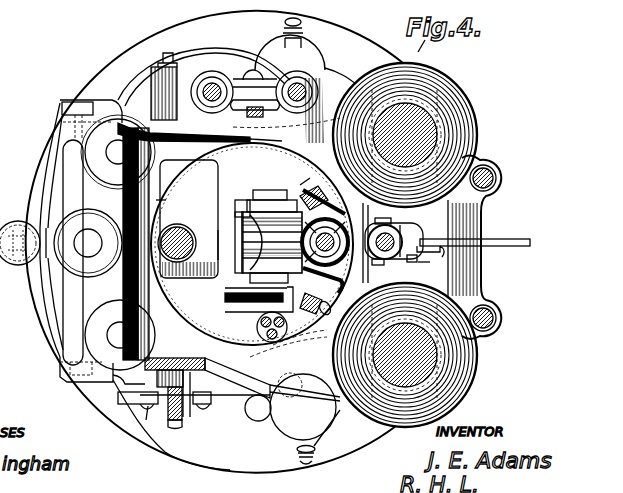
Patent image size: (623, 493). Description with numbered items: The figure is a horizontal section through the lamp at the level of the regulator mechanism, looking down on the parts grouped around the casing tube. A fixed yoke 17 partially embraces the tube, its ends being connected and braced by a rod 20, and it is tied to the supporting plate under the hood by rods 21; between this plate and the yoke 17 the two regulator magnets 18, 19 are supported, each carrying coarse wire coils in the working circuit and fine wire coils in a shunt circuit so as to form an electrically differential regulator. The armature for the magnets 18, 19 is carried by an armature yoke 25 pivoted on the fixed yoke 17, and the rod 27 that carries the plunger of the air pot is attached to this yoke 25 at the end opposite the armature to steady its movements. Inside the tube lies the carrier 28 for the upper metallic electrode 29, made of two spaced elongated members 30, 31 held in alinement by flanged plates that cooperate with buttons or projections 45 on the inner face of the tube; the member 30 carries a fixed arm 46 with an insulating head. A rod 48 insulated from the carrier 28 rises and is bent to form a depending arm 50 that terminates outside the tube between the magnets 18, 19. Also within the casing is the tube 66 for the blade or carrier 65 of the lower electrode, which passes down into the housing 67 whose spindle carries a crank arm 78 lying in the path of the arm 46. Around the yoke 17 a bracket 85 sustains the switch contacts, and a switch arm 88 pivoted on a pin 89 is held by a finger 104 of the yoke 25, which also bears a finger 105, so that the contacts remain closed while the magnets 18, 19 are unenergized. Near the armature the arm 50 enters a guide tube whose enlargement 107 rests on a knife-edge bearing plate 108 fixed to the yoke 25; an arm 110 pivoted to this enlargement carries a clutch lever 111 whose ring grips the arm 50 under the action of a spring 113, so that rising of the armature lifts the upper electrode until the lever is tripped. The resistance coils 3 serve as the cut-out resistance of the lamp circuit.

The resistance coils 3 is at (195, 277).
The yoke 17 is at (229, 268).
The magnet 18 is at (474, 137).
The magnet 19 is at (474, 357).
The rod 20 is at (140, 200).
The rods 21 is at (496, 178).
The armature yoke 25 is at (205, 436).
The rod 27 is at (325, 242).
The carrier 28 is at (272, 193).
The upper metallic electrode 29 is at (268, 242).
The elongated member 30 is at (269, 278).
The elongated member 31 is at (226, 212).
The buttons or projections 45 is at (308, 178).
The fixed arm 46 is at (225, 298).
The rod 48 is at (311, 253).
The arm 50 is at (412, 240).
The blade or carrier 65 is at (184, 235).
The tube 66 is at (206, 249).
The housing 67 is at (189, 219).
The crank arm 78 is at (240, 316).
The bracket 85 is at (175, 358).
The switch arm 88 is at (162, 385).
The pin 89 is at (170, 62).
The finger 104 is at (140, 408).
The finger 105 is at (225, 430).
The enlargement 107 is at (393, 266).
The knife-edge bearing plate 108 is at (422, 263).
The arm 110 is at (394, 218).
The clutch lever 111 is at (475, 240).
The spring 113 is at (427, 261).